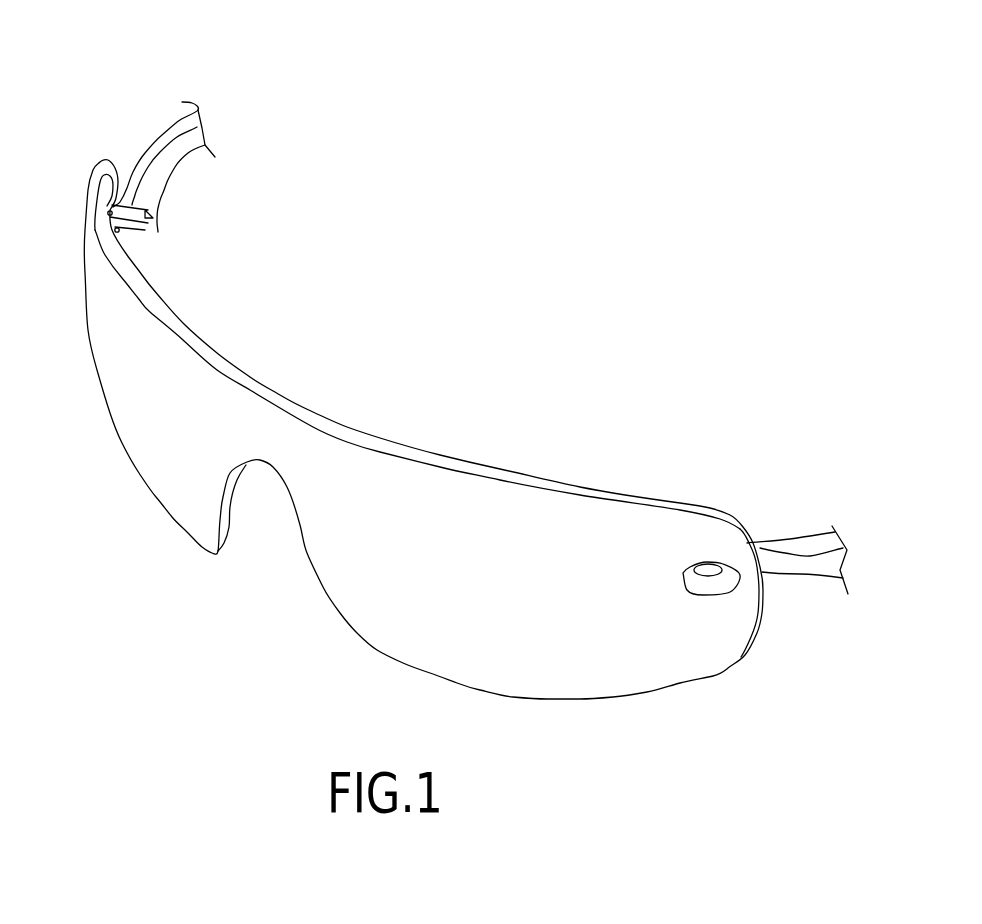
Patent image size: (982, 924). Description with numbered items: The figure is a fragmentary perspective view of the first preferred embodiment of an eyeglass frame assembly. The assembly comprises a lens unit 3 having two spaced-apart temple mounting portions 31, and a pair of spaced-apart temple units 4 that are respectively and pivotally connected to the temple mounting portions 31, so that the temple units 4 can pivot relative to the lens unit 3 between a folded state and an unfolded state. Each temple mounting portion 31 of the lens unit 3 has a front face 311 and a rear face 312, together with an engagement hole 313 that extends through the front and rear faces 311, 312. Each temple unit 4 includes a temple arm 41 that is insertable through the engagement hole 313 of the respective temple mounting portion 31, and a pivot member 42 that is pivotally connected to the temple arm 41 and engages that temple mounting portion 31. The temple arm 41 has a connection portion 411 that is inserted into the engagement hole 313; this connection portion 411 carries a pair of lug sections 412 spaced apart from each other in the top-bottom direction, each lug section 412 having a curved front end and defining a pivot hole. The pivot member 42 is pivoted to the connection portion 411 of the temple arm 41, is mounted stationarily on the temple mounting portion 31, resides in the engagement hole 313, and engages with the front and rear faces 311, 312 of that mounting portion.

The lens unit 3 is at (366, 423).
The temple mounting portion 31 is at (98, 177).
The front face 311 is at (97, 257).
The rear face 312 is at (127, 175).
The engagement hole 313 is at (718, 565).
The temple unit 4 is at (207, 167).
The temple arm 41 is at (773, 567).
The connection portion 411 is at (175, 132).
The lug section 412 is at (128, 192).
The pivot member 42 is at (710, 612).